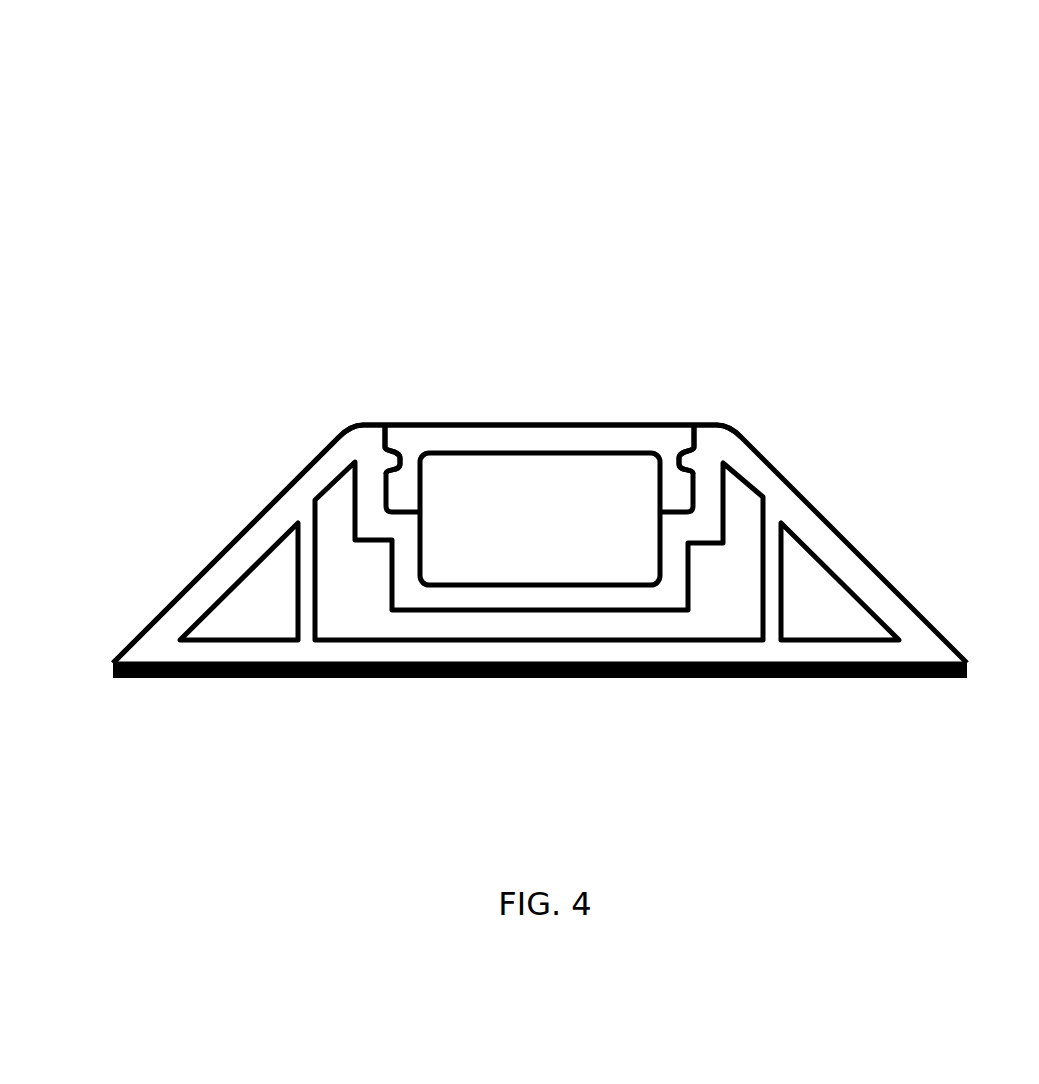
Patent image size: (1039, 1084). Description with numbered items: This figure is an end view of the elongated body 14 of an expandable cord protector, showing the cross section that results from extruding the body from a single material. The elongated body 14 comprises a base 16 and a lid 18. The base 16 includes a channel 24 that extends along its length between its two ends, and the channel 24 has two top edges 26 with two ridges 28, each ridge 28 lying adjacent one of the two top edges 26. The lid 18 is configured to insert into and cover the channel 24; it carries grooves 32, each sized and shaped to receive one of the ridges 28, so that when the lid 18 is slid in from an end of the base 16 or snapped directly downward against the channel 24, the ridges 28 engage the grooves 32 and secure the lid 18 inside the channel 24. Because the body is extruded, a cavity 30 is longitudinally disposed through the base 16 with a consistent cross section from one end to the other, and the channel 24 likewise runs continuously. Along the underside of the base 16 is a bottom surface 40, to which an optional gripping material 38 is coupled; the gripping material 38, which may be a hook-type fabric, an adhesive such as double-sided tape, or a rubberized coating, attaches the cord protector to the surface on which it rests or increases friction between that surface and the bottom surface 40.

The elongated body 14 is at (232, 267).
The base 16 is at (183, 612).
The lid 18 is at (545, 445).
The channel 24 is at (453, 555).
The top edges 26 is at (383, 428).
The ridges 28 is at (386, 462).
The cavity 30 is at (730, 610).
The grooves 32 is at (393, 450).
The gripping material 38 is at (680, 673).
The bottom surface 40 is at (310, 667).